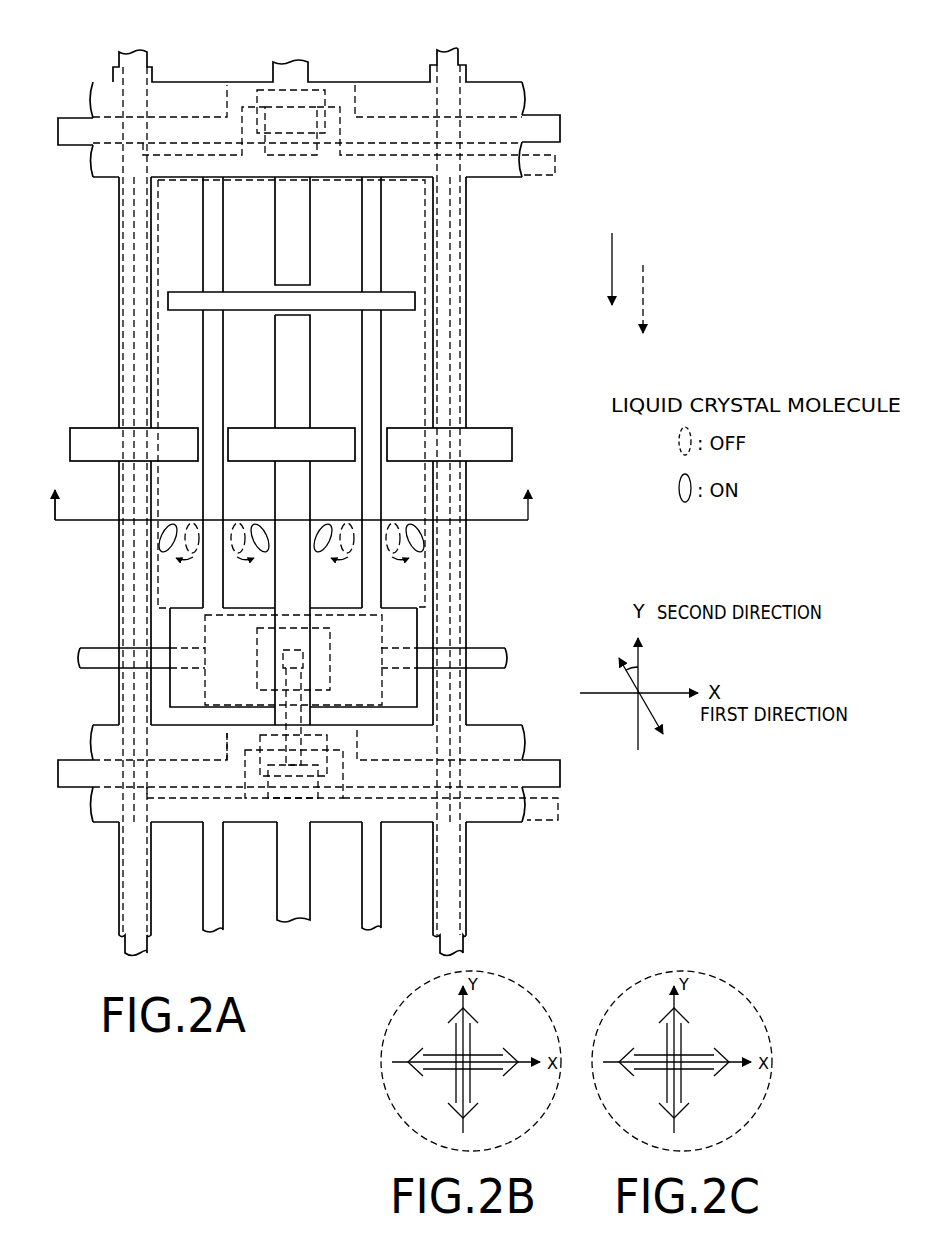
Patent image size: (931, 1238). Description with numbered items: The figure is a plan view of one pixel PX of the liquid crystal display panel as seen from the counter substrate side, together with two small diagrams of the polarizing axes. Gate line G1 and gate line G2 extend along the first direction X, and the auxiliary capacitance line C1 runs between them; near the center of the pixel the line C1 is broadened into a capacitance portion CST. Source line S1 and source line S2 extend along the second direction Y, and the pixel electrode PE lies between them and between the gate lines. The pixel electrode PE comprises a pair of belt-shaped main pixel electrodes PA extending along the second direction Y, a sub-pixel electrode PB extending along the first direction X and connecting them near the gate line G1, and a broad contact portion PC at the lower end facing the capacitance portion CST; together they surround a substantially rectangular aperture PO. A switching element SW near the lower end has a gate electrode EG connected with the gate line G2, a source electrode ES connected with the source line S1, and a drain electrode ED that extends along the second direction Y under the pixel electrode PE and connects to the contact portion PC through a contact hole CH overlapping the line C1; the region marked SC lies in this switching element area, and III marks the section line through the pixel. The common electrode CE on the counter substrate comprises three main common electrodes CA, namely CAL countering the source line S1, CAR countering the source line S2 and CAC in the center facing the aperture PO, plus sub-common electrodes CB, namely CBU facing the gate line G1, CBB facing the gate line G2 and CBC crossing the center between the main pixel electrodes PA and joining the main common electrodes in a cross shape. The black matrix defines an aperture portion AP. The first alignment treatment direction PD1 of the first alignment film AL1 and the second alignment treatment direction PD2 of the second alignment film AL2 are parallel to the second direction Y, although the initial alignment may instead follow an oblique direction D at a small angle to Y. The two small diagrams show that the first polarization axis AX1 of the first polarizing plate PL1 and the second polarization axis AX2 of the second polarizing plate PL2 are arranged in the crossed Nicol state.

In FIG. 2A, the source line S1 is at (135, 52).
In FIG. 2A, the source line S2 is at (449, 50).
In FIG. 2A, the gate line G1 is at (560, 130).
In FIG. 2A, the gate line G2 is at (560, 772).
In FIG. 2A, the auxiliary capacitance line C1 is at (507, 658).
In FIG. 2A, the common electrode CE is at (471, 262).
In FIG. 2A, the sub-common electrode CB is at (324, 449).
In FIG. 2A, the sub-common electrode CBU is at (382, 80).
In FIG. 2A, the sub-common electrode CBB is at (412, 820).
In FIG. 2A, the sub-common electrode CBC is at (182, 455).
In FIG. 2A, the main common electrode CA is at (311, 499).
In FIG. 2A, the main common electrode CAL is at (118, 270).
In FIG. 2A, the main common electrode CAR is at (468, 352).
In FIG. 2A, the main common electrode CAC is at (285, 213).
In FIG. 2A, the pixel electrode PE is at (394, 392).
In FIG. 2A, the main pixel electrode PA is at (382, 338).
In FIG. 2A, the sub-pixel electrode PB is at (330, 292).
In FIG. 2A, the pixel PX is at (452, 543).
In FIG. 2A, the aperture portion AP is at (430, 448).
In FIG. 2A, the aperture PO is at (218, 560).
In FIG. 2A, the contact portion PC is at (405, 618).
In FIG. 2A, the capacitance portion CST is at (248, 618).
In FIG. 2A, the contact hole CH is at (300, 643).
In FIG. 2A, the drain electrode ED is at (302, 747).
In FIG. 2A, the source contact SC is at (262, 737).
In FIG. 2A, the gate electrode EG is at (348, 749).
In FIG. 2A, the source electrode ES is at (338, 806).
In FIG. 2A, the switching element SW is at (331, 840).
In FIG. 2A, the section line III- III is at (290, 510).
In FIG. 2A, the first alignment treatment direction PD1 is at (612, 245).
In FIG. 2A, the second alignment treatment direction PD2 is at (643, 278).
In FIG. 2A, the first alignment film AL1 is at (677, 259).
In FIG. 2A, the second alignment film AL2 is at (704, 288).
In FIG. 2A, the oblique direction D is at (618, 654).
In FIG. 2B, the first polarization axis AX1 is at (497, 1075).
In FIG. 2C, the first polarization axis AX1 is at (681, 1028).
In FIG. 2B, the second polarization axis AX2 is at (470, 1028).
In FIG. 2C, the second polarization axis AX2 is at (708, 1075).
In FIG. 2B, the first polarizing plate PL1 is at (466, 1087).
In FIG. 2C, the first polarizing plate PL1 is at (703, 1063).
In FIG. 2B, the second polarizing plate PL2 is at (492, 1063).
In FIG. 2C, the second polarizing plate PL2 is at (677, 1087).